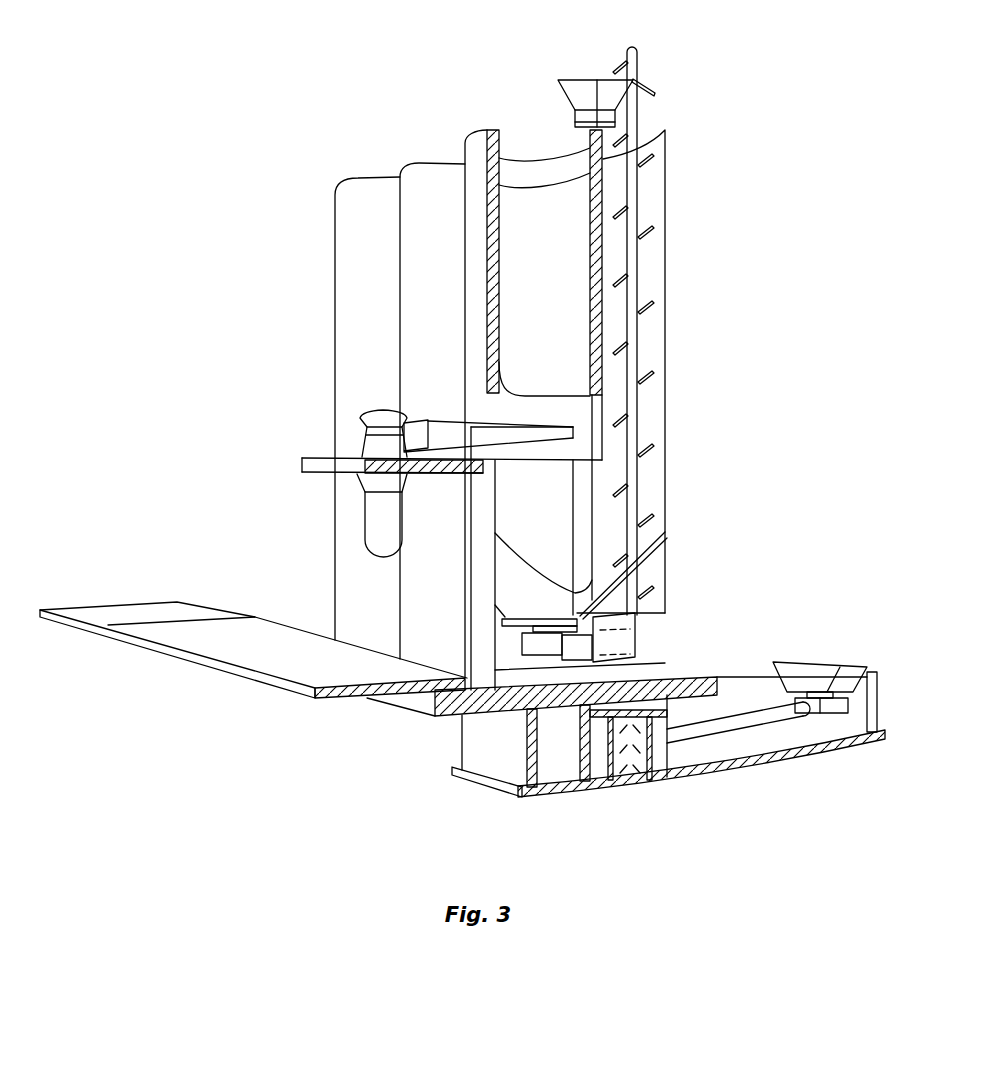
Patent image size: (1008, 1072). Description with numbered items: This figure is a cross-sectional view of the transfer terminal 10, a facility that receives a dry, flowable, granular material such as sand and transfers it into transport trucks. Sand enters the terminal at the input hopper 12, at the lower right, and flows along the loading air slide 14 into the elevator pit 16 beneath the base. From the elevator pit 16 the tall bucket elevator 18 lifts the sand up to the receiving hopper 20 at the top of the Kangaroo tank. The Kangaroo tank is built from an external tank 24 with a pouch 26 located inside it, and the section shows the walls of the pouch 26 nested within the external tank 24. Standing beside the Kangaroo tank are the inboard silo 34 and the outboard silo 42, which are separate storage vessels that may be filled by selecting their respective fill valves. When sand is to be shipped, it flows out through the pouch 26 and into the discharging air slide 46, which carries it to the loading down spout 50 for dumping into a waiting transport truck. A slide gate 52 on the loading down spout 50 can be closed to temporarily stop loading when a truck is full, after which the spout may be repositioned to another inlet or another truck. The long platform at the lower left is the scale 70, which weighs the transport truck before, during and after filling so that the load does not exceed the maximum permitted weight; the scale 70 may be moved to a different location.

The transfer terminal 10 is at (262, 75).
The input hopper 12 is at (820, 660).
The loading air slide 14 is at (770, 718).
The elevator pit 16 is at (635, 772).
The bucket elevator 18 is at (636, 342).
The receiving hopper 20 is at (580, 80).
The external tank 24 is at (532, 521).
The pouch 26 is at (531, 290).
The inboard silo 34 is at (424, 306).
The outboard silo 42 is at (354, 318).
The discharging air slide 46 is at (455, 424).
The loading down spout 50 is at (371, 540).
The slide gate 52 is at (390, 410).
The scale 70 is at (271, 665).